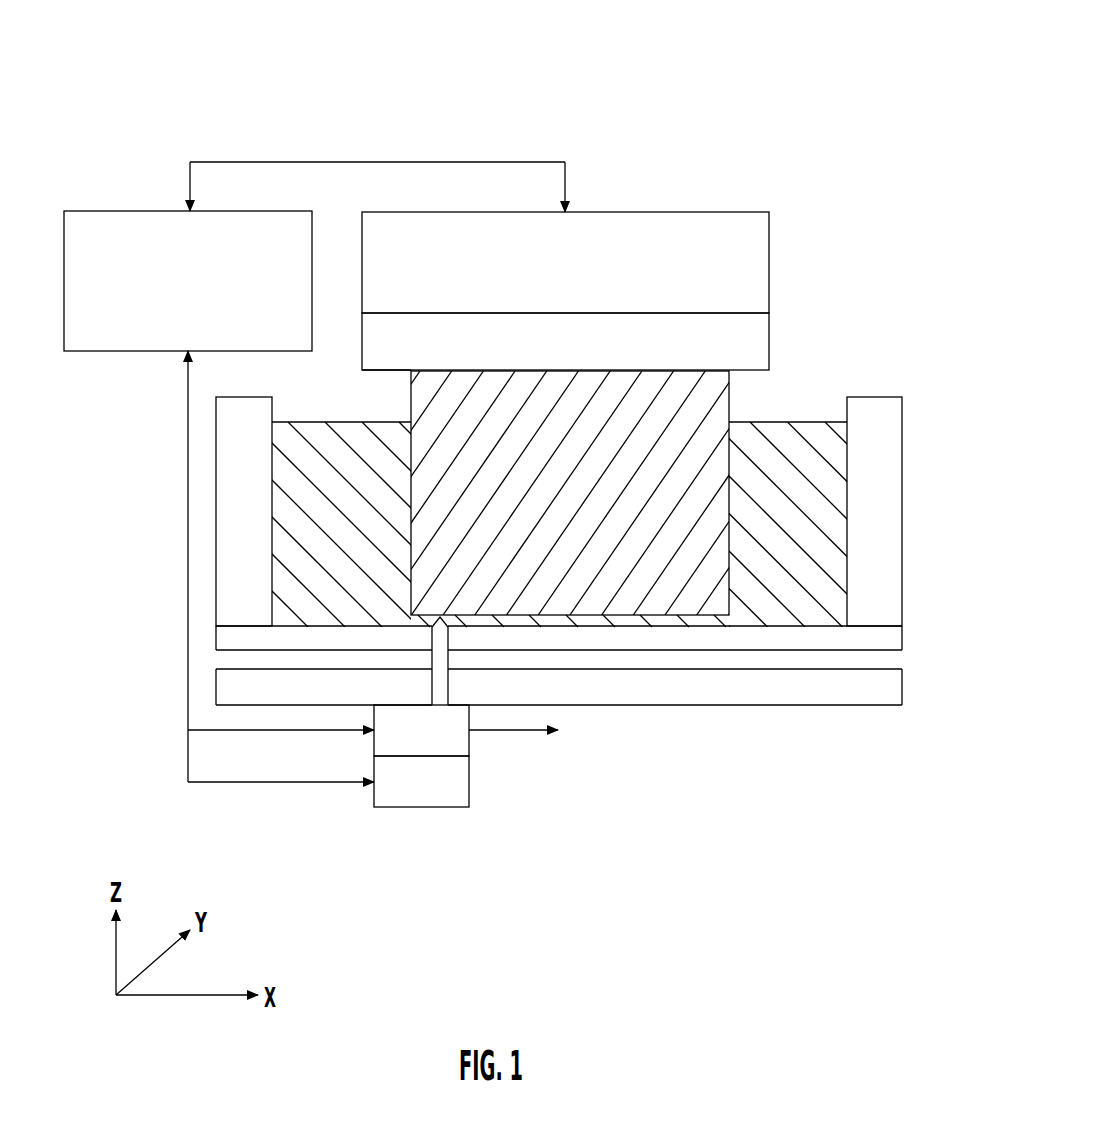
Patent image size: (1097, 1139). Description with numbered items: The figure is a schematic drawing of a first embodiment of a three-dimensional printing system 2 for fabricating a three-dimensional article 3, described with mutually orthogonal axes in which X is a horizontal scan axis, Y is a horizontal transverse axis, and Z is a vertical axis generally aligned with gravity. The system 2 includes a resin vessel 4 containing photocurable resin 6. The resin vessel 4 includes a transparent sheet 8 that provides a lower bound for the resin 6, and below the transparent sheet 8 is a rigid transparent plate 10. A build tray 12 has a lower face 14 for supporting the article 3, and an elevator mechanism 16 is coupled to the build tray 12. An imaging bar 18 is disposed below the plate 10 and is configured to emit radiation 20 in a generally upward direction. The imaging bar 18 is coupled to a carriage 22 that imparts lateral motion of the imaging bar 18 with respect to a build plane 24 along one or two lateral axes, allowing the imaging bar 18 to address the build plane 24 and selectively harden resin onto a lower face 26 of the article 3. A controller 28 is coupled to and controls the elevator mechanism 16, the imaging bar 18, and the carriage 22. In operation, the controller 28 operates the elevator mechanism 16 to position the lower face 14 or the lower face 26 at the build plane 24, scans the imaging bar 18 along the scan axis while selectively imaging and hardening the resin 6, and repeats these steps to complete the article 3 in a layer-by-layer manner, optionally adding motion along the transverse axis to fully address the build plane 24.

The three-dimensional printing system 2 is at (599, 100).
The three-dimensional article 3 is at (722, 408).
The resin vessel 4 is at (873, 413).
The photocurable resin 6 is at (832, 527).
The transparent sheet 8 is at (888, 640).
The rigid transparent plate 10 is at (870, 692).
The build tray 12 is at (769, 343).
The lower face 14 is at (388, 370).
The elevator mechanism 16 is at (769, 250).
The imaging bar 18 is at (469, 733).
The radiation 20 is at (433, 675).
The carriage 22 is at (415, 807).
The build plane 24 is at (593, 617).
The lower face 26 is at (652, 751).
The controller 28 is at (152, 351).